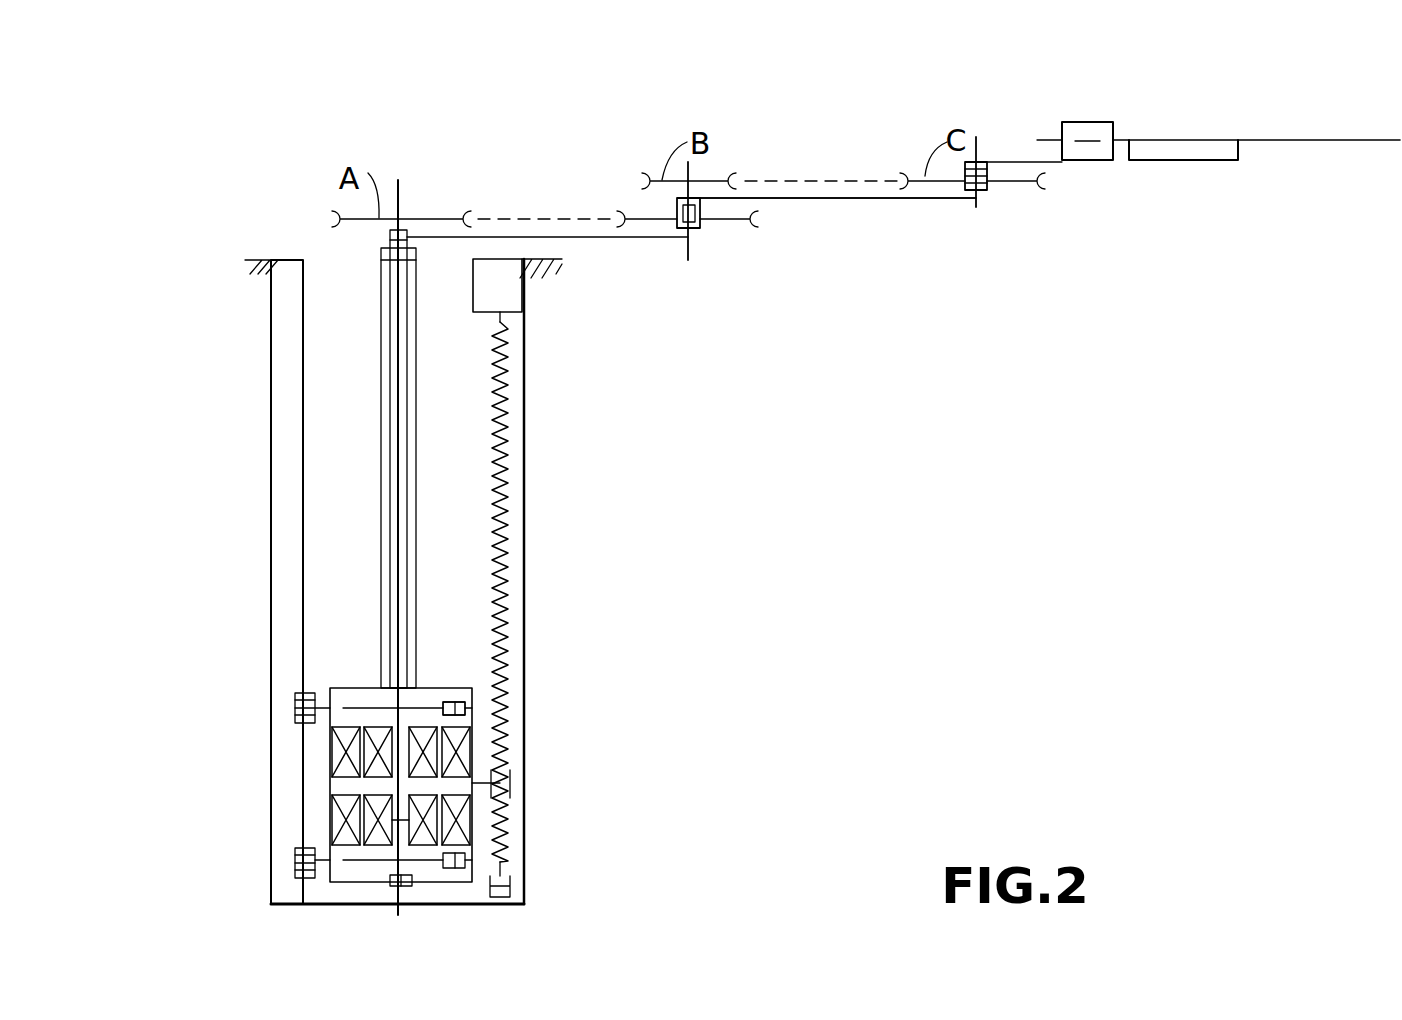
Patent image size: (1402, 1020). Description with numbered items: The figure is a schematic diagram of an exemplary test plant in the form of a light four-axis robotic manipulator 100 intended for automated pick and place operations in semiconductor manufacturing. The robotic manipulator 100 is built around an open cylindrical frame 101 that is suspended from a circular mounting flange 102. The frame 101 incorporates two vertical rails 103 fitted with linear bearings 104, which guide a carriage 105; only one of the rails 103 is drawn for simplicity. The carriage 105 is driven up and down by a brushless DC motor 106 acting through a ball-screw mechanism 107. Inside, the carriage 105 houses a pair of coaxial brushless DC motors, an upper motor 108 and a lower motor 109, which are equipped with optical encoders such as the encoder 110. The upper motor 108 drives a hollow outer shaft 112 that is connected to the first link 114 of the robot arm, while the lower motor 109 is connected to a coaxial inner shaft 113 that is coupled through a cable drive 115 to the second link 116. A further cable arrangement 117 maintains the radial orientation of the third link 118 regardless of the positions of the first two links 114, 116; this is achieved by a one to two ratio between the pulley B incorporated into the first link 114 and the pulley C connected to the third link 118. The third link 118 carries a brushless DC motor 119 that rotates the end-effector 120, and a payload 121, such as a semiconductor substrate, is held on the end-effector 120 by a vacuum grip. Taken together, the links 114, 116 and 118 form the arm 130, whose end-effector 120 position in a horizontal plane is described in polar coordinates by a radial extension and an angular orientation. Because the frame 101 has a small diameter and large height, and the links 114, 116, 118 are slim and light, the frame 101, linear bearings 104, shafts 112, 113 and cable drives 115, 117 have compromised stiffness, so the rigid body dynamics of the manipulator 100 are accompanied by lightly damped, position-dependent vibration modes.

The robotic manipulator 100 is at (402, 157).
The open cylindrical frame 101 is at (266, 345).
The circular mounting flange 102 is at (260, 262).
The vertical rail 103 is at (303, 618).
The linear bearing 104 is at (297, 705).
The carriage 105 is at (330, 830).
The brushless DC motor 106 is at (512, 272).
The ball-screw mechanism 107 is at (500, 365).
The upper motor 108 is at (468, 708).
The lower motor 109 is at (438, 808).
The optical encoder 110 is at (433, 700).
The hollow outer shaft 112 is at (386, 488).
The coaxial inner shaft 113 is at (402, 618).
The first link 114 is at (478, 235).
The cable drive 115 is at (565, 220).
The second link 116 is at (755, 183).
The cable arrangement 117 is at (843, 183).
The third link 118 is at (1013, 160).
The brushless DC motor 119 is at (1103, 122).
The end-effector 120 is at (1185, 150).
The payload 121 is at (1307, 140).
The arm 130 is at (945, 268).